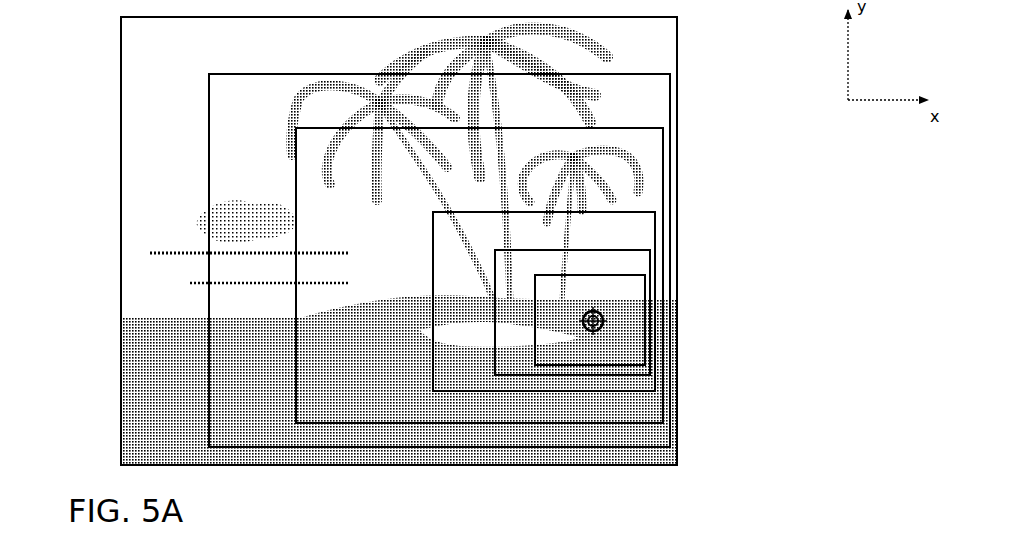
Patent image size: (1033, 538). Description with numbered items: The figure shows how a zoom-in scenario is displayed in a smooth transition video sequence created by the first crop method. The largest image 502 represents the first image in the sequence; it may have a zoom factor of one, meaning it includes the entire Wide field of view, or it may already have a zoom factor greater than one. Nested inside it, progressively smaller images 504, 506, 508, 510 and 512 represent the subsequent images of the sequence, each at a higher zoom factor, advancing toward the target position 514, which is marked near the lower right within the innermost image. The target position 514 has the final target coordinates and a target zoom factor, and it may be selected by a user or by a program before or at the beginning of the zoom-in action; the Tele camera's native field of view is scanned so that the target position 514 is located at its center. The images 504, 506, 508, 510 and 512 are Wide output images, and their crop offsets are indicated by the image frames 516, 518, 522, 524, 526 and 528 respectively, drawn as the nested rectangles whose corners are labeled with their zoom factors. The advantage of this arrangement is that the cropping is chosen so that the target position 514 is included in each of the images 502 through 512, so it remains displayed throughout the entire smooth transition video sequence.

The image 502 is at (632, 55).
The image 504 is at (632, 115).
The image 506 is at (635, 193).
The image 508 is at (630, 236).
The image 510 is at (635, 263).
The image 512 is at (630, 300).
The target position 514 is at (614, 321).
The image frame 516 is at (117, 17).
The image frame 518 is at (205, 74).
The image frame 522 is at (292, 128).
The image frame 524 is at (428, 213).
The image frame 526 is at (490, 250).
The image frame 528 is at (530, 275).